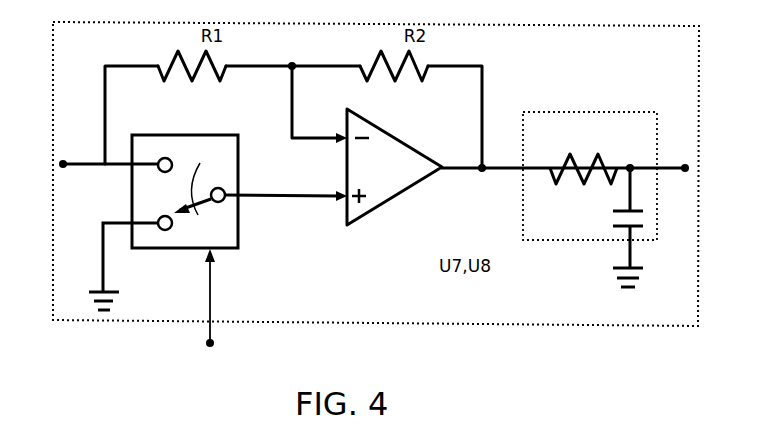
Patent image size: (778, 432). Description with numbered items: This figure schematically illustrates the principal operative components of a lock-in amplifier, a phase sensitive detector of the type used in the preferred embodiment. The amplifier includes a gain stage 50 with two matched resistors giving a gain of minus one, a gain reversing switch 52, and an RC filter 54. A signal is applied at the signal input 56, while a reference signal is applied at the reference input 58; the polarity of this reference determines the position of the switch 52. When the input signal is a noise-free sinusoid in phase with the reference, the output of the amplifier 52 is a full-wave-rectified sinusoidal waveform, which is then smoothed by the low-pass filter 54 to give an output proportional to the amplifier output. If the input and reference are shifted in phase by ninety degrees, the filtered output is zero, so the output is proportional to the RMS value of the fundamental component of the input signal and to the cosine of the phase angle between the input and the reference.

The gain stage 50 is at (238, 238).
The gain reversing switch 52 is at (392, 192).
The RC filter 54 is at (550, 108).
The signal input 56 is at (85, 170).
The reference input 58 is at (376, 182).